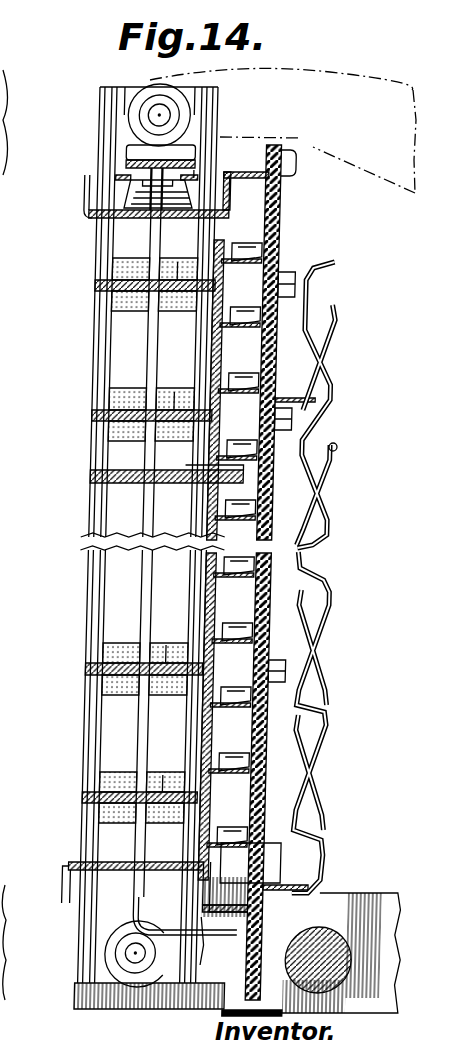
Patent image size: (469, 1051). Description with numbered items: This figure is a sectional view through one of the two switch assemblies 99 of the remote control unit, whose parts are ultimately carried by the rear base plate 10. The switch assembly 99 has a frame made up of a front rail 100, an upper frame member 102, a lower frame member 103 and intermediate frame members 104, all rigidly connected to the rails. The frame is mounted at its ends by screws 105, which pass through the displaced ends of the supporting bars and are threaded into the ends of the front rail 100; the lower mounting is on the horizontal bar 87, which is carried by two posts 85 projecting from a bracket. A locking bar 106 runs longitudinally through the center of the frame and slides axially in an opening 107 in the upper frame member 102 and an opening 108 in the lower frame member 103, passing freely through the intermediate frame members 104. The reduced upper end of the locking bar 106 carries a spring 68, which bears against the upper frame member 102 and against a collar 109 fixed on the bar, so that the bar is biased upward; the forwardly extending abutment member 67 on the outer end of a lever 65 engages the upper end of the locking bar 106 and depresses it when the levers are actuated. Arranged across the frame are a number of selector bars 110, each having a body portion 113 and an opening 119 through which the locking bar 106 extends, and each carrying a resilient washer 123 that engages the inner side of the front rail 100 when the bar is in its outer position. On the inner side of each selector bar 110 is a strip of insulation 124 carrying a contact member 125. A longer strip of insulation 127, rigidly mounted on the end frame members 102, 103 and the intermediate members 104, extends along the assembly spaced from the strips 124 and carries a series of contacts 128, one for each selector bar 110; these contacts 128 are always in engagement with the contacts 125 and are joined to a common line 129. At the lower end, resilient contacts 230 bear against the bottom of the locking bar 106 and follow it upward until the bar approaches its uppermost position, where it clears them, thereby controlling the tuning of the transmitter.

The rear base plate 10 is at (78, 676).
The levers 65 is at (333, 84).
The abutment members 67 is at (137, 153).
The springs 68 is at (135, 190).
The posts 85 is at (337, 930).
The horizontal bar 87 is at (332, 903).
The switch assembly 99 is at (79, 611).
The front rail 100 is at (95, 350).
The upper frame member 102 is at (100, 222).
The lower frame member 103 is at (73, 862).
The intermediate frame members 104 is at (115, 490).
The screws 105 is at (158, 113).
The locking bar 106 is at (155, 328).
The opening 107 is at (246, 203).
The opening 108 is at (140, 872).
The collar 109 is at (195, 175).
The selector bars 110 is at (88, 288).
The body portion 113 is at (170, 778).
The openings 119 is at (125, 272).
The resilient washer 123 is at (115, 299).
The strip of insulation 124 is at (265, 240).
The contact member 125 is at (265, 252).
The strip of insulation 127 is at (285, 152).
The contacts 128 is at (300, 325).
The common line 129 is at (340, 448).
The resilient contacts 230 is at (156, 963).